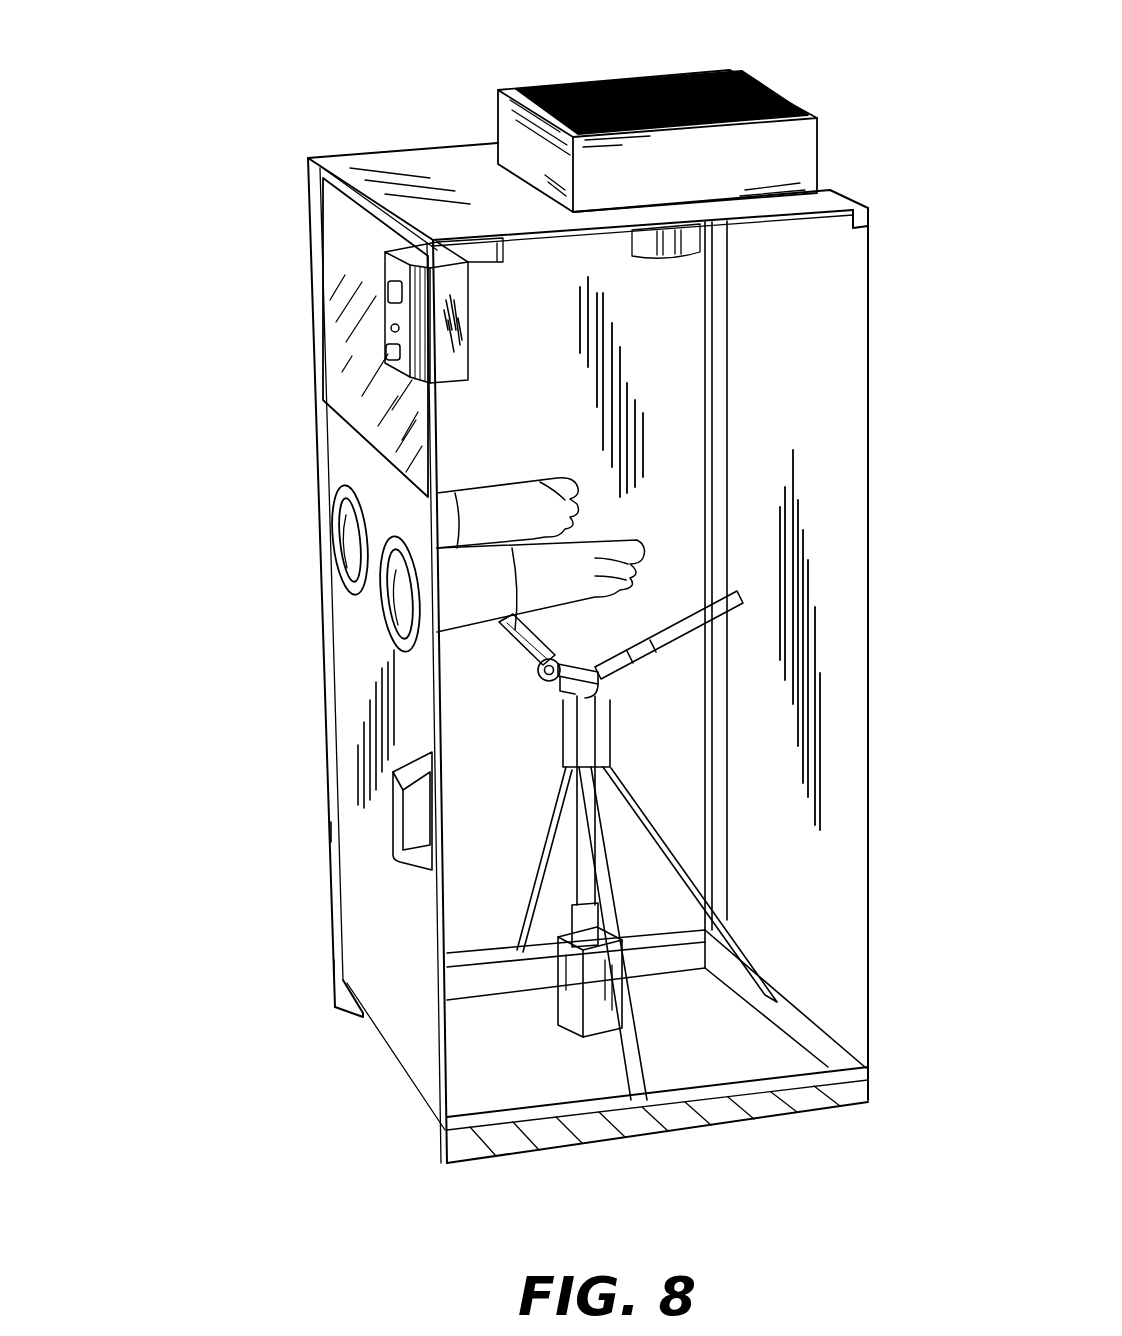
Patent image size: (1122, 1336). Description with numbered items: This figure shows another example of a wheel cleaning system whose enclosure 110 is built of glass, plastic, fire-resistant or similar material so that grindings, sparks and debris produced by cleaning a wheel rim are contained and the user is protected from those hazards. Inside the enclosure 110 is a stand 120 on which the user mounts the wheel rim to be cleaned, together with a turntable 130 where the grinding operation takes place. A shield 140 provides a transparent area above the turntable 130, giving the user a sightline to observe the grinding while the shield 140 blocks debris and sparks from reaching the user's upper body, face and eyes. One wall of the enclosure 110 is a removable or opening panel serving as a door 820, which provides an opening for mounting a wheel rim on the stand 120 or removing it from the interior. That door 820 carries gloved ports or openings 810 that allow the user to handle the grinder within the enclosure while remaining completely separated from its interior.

The enclosure 110 is at (305, 100).
The stand 120 is at (605, 785).
The turntable 130 is at (707, 618).
The shield 140 is at (345, 280).
The gloved ports or openings 810 is at (405, 597).
The door 820 is at (373, 872).